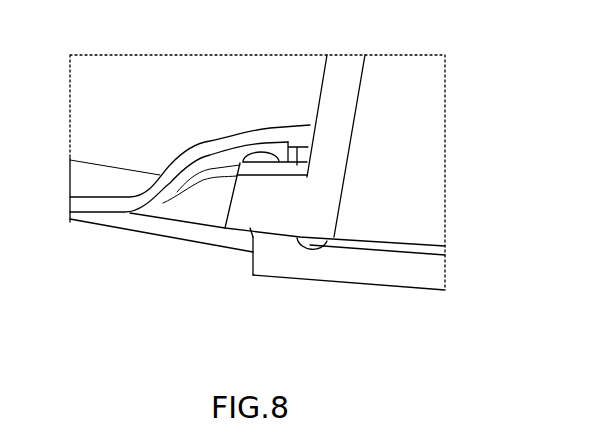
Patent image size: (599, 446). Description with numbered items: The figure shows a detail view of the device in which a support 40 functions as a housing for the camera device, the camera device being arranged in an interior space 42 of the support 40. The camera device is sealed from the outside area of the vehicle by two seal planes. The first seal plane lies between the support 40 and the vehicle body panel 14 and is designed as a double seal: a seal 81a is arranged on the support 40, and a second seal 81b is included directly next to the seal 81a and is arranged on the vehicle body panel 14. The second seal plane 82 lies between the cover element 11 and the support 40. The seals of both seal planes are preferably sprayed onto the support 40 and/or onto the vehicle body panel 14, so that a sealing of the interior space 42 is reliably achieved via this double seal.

The cover element 11 is at (350, 262).
The vehicle body panel 14 is at (209, 146).
The support 40 is at (340, 86).
The interior space 42 is at (411, 178).
The seal 81a is at (262, 166).
The second seal 81b is at (285, 126).
The second seal plane 82 is at (307, 260).